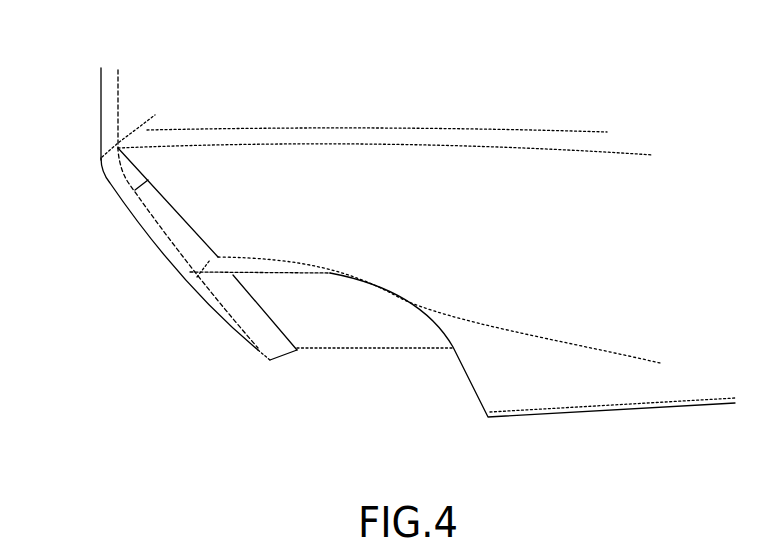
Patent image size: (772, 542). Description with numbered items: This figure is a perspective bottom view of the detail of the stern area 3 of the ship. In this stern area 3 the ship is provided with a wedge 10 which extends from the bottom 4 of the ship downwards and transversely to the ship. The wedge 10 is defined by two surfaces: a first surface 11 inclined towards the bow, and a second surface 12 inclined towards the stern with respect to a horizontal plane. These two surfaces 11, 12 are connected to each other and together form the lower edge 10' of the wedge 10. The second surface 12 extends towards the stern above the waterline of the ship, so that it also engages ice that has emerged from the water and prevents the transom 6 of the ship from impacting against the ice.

The stern area 3 is at (138, 310).
The bottom 4 is at (435, 192).
The transom 6 is at (97, 109).
The wedge 10 is at (268, 415).
The lower edge 10' is at (221, 370).
The first surface 11 is at (170, 217).
The second surface 12 is at (150, 218).